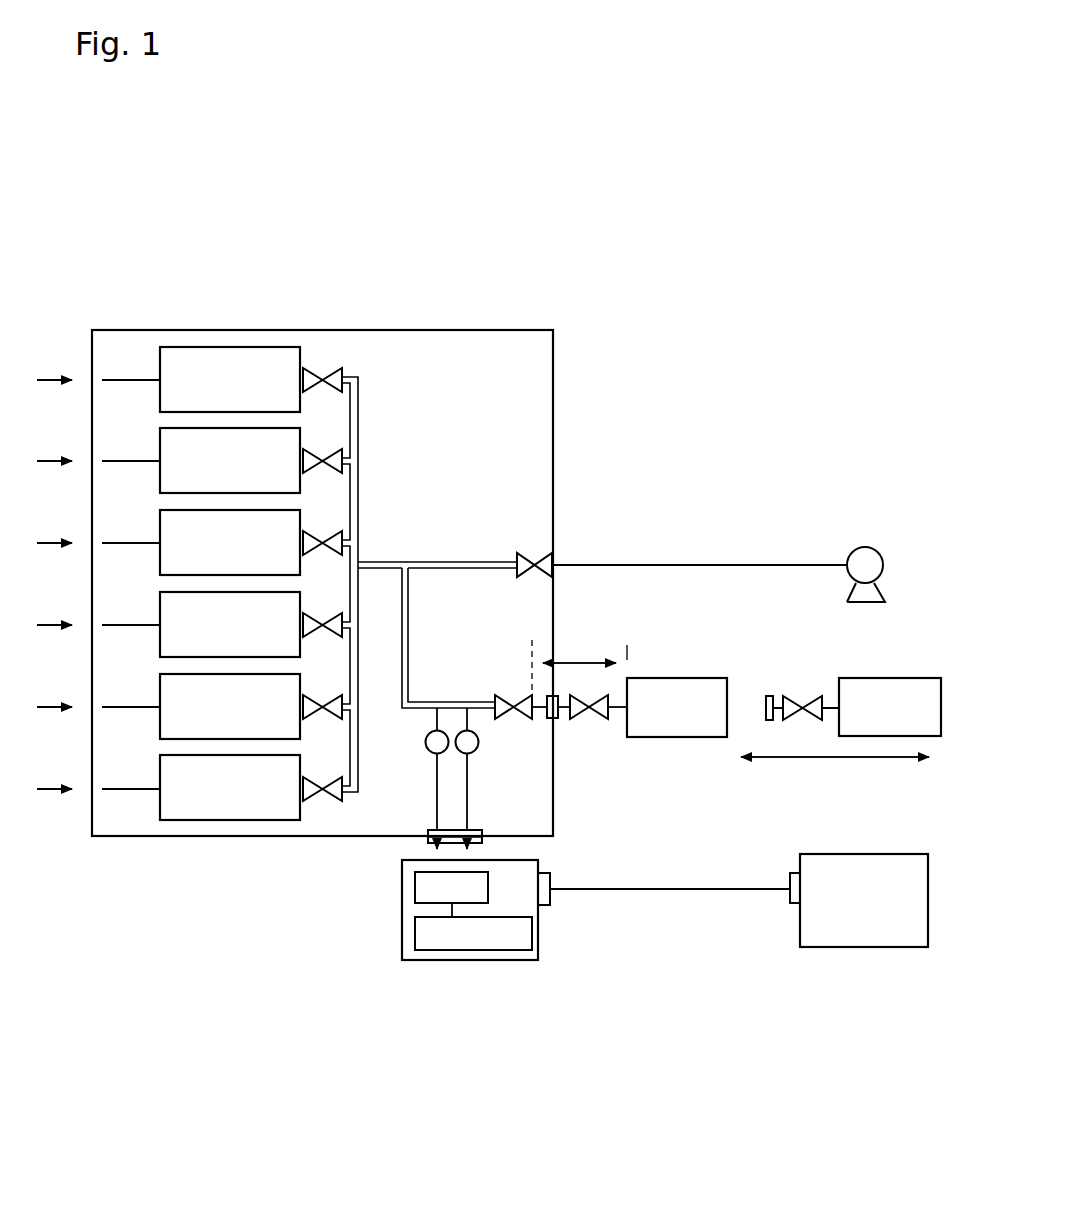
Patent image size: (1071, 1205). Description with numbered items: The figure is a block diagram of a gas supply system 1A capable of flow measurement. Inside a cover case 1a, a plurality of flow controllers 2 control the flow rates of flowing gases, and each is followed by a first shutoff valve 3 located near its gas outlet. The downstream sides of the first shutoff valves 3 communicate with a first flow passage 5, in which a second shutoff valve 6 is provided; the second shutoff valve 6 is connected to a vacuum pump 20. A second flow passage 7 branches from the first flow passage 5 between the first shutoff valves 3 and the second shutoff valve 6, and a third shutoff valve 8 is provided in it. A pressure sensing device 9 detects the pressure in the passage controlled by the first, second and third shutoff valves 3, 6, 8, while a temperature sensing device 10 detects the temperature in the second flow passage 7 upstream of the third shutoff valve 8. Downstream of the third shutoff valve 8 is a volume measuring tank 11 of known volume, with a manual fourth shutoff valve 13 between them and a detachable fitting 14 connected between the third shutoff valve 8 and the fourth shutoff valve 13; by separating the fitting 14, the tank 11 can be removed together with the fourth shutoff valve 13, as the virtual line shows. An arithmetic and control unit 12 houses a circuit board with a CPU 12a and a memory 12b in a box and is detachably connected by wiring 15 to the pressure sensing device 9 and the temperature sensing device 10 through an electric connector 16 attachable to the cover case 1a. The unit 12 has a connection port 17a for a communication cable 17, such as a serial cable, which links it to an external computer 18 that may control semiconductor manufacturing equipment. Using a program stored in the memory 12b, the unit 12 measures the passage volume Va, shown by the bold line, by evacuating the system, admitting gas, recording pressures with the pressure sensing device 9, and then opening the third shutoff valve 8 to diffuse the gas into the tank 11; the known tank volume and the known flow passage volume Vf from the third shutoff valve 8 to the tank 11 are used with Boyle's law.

The gas supply system 1A is at (660, 251).
The cover case 1a is at (553, 378).
The flow controller 2 is at (196, 347).
The first shutoff valve 3 is at (318, 368).
The first flow passage 5 is at (477, 562).
The second shutoff valve 6 is at (535, 575).
The second flow passage 7 is at (405, 622).
The third shutoff valve 8 is at (510, 695).
The pressure sensing device 9 is at (478, 744).
The temperature sensing device 10 is at (432, 755).
The volume measuring tank 11 is at (675, 737).
The arithmetic and control unit 12 is at (458, 971).
The CPU 12a is at (415, 893).
The memory 12b is at (537, 942).
The fourth shutoff valve 13 is at (605, 715).
The detachable fitting 14 is at (560, 718).
The wiring 15 is at (437, 798).
The electric connector 16 is at (425, 838).
The communication cable 17 is at (672, 890).
The connection port 17a is at (552, 900).
The external computer 18 is at (853, 947).
The vacuum pump 20 is at (866, 547).
The passage volume Va is at (425, 551).
The flow passage volume Vf is at (579, 662).